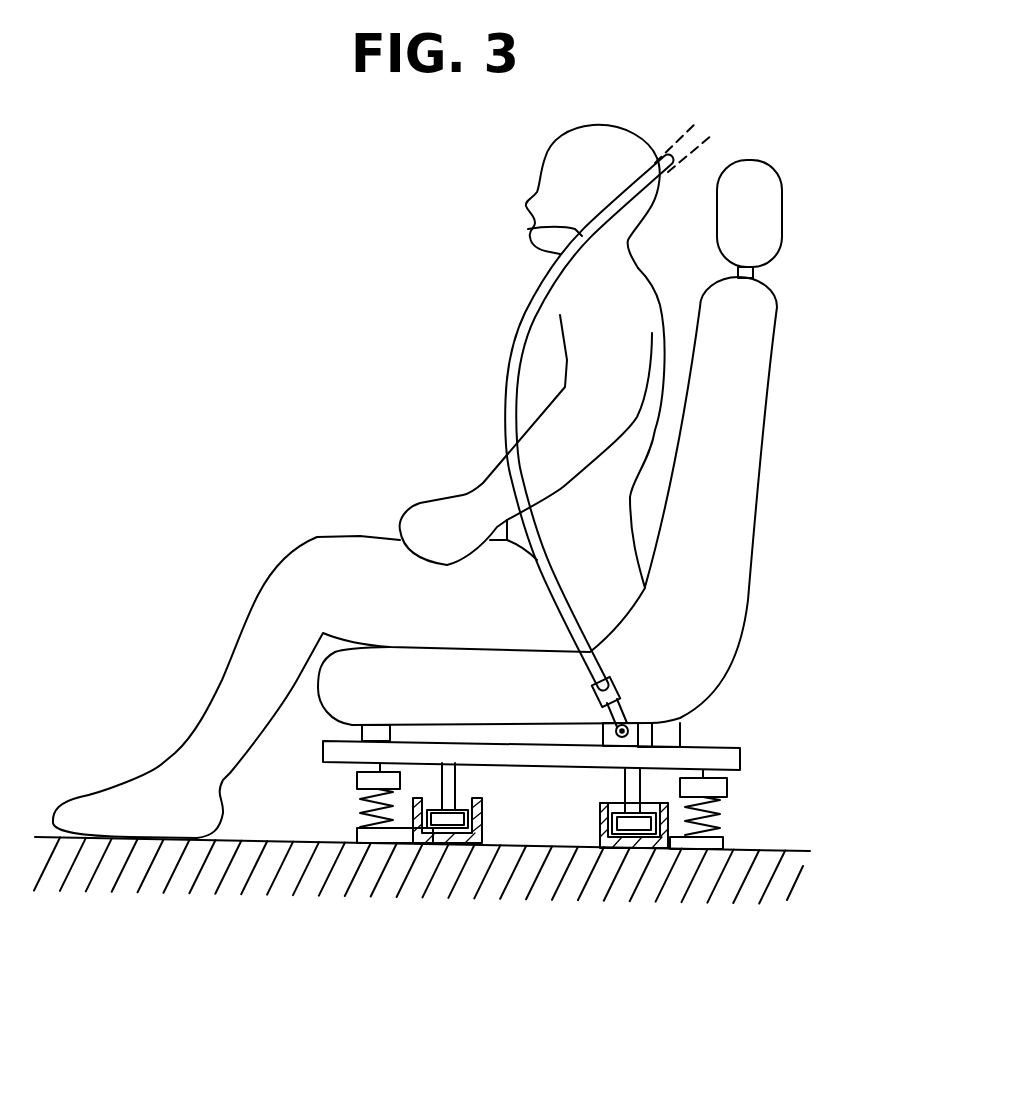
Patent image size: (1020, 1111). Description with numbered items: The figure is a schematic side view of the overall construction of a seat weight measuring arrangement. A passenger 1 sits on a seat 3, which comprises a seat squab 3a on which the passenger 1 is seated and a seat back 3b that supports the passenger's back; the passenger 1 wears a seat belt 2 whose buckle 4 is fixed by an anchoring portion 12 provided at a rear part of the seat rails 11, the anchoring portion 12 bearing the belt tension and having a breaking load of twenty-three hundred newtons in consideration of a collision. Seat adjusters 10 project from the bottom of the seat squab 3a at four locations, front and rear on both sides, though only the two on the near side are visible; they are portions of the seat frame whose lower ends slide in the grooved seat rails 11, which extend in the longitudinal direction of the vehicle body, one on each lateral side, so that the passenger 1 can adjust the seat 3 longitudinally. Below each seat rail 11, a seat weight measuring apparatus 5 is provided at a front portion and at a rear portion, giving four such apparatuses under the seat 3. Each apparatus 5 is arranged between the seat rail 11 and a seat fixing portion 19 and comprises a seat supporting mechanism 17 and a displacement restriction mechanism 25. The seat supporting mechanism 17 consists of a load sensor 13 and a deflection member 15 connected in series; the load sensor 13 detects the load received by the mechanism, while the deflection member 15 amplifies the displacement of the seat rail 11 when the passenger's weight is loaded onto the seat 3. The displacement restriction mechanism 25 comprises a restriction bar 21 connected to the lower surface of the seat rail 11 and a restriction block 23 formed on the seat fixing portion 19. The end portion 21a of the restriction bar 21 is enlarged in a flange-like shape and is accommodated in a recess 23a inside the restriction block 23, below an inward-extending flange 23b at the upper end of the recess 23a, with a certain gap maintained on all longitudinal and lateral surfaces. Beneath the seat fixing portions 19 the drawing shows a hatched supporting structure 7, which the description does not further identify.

The passenger 1 is at (523, 385).
The seat belt 2 is at (530, 232).
The seat 3 is at (578, 442).
The seat squab 3a is at (448, 667).
The seat back 3b is at (753, 493).
The buckle 4 is at (593, 692).
The seat weight measuring apparatus 5 is at (608, 819).
The vehicle floor 7 is at (793, 850).
The seat adjuster 10 is at (677, 723).
The seat rail 11 is at (733, 757).
The anchoring portion 12 is at (607, 730).
The load sensor 13 is at (727, 788).
The deflection member 15 is at (720, 812).
The seat supporting mechanism 17 is at (621, 787).
The seat fixing portion 19 is at (713, 842).
The restriction bar 21 is at (633, 788).
The end portion 21a is at (648, 840).
The restriction block 23 is at (620, 823).
The recess 23a is at (630, 840).
The flange 23b is at (652, 803).
The displacement restriction mechanism 25 is at (590, 833).